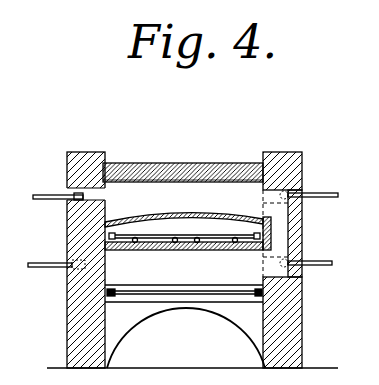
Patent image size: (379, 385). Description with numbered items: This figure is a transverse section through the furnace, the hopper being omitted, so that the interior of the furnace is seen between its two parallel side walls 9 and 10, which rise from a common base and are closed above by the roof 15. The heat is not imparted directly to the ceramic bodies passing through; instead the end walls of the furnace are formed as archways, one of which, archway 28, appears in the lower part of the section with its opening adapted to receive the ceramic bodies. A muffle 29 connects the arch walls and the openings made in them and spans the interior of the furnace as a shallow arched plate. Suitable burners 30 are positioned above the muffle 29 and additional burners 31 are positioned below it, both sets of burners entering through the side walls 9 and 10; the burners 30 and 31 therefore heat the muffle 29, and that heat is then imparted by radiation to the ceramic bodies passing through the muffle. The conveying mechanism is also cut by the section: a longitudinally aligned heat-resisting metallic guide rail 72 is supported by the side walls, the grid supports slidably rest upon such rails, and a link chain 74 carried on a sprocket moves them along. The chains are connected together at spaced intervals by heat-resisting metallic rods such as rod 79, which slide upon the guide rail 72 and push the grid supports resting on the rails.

The side wall 9 is at (67, 221).
The side wall 10 is at (301, 243).
The roof 15 is at (112, 234).
The archway 28 is at (183, 272).
The muffle 29 is at (196, 213).
The burners 30 is at (42, 195).
The burners 31 is at (39, 268).
The guide rail 72 is at (236, 238).
The link chain 74 is at (257, 235).
The heat-resisting metallic rod 79 is at (157, 242).